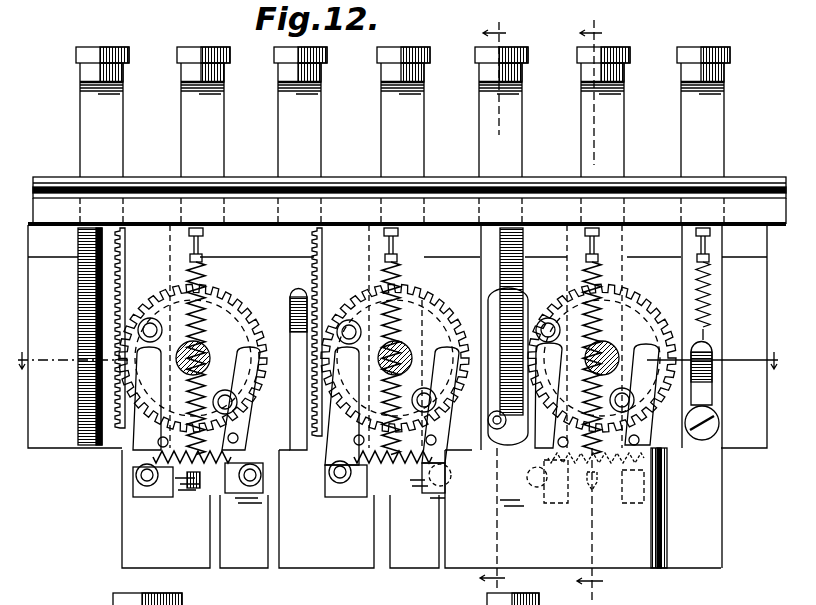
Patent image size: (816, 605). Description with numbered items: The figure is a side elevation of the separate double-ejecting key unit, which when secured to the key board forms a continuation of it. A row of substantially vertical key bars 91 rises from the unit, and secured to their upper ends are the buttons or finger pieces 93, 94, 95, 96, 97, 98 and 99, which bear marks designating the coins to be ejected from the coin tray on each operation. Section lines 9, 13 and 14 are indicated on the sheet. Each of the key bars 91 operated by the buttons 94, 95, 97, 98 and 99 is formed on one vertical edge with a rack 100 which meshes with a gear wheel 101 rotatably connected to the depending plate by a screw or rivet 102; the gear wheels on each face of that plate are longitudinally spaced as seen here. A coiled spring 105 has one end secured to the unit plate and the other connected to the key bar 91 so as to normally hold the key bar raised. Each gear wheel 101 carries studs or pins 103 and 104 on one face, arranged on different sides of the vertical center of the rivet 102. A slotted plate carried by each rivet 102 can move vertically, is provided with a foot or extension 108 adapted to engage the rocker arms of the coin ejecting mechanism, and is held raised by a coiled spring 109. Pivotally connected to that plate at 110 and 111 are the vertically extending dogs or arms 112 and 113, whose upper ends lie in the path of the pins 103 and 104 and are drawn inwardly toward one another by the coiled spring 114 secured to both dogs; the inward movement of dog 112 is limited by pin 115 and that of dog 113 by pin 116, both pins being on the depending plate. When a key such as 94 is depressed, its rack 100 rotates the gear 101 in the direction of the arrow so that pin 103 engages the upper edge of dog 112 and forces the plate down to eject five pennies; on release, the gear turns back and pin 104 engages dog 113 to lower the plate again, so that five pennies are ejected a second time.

The section line 9 is at (400, 359).
The section line 13 is at (592, 304).
The section line 14 is at (486, 297).
The key bars 91 is at (186, 132).
The button or finger piece 93 is at (708, 52).
The button or finger piece 94 is at (612, 50).
The button or finger piece 95 is at (522, 50).
The button or finger piece 96 is at (414, 49).
The button or finger piece 97 is at (278, 58).
The button or finger piece 98 is at (197, 52).
The button or finger piece 99 is at (97, 50).
The rack 100 is at (126, 254).
The gear wheel 101 is at (219, 299).
The screw or rivet 102 is at (180, 362).
The stud or pin 103 is at (150, 318).
The stud or pin 104 is at (226, 390).
The coiled spring 105 is at (80, 306).
The foot or extension 108 is at (134, 543).
The coiled spring 109 is at (204, 258).
The pivot 110 is at (145, 480).
The pivot 111 is at (250, 486).
The dog or arm 112 is at (144, 437).
The dog or arm 113 is at (246, 345).
The coiled spring 114 is at (216, 464).
The pin 115 is at (160, 446).
The pin 116 is at (240, 443).